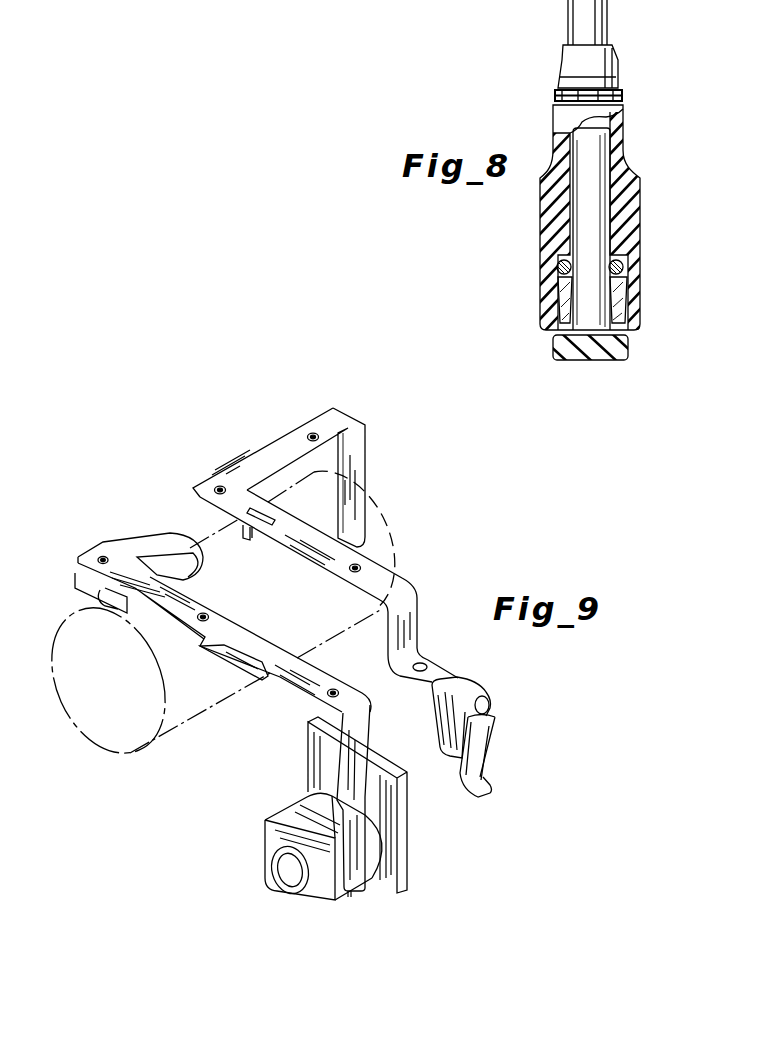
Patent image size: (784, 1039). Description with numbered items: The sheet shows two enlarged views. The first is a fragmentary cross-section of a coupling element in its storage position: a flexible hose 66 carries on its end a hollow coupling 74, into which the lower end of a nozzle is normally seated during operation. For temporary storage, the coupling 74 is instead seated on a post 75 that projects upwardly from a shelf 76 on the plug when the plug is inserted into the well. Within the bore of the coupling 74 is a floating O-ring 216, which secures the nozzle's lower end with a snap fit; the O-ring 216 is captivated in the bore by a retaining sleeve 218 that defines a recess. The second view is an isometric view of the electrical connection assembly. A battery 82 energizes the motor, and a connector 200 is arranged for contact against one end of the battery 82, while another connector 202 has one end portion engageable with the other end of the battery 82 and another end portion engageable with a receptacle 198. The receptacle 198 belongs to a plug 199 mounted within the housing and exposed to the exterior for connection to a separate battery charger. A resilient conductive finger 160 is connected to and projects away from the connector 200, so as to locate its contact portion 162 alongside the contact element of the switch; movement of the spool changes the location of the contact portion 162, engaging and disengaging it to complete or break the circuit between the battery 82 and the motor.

In FIG. 8, the flexible hose 66 is at (610, 31).
In FIG. 8, the hollow coupling 74 is at (628, 213).
In FIG. 8, the post 75 is at (592, 253).
In FIG. 8, the floating O-ring 216 is at (630, 278).
In FIG. 8, the retaining sleeve 218 is at (620, 313).
In FIG. 8, the shelf 76 is at (563, 347).
In FIG. 9, the connector 200 is at (372, 475).
In FIG. 9, the battery 82 is at (410, 563).
In FIG. 9, the connector 202 is at (130, 545).
In FIG. 9, the resilient conductive finger 160 is at (490, 750).
In FIG. 9, the contact portion 162 is at (472, 790).
In FIG. 9, the receptacle 198 is at (280, 893).
In FIG. 9, the plug 199 is at (340, 893).